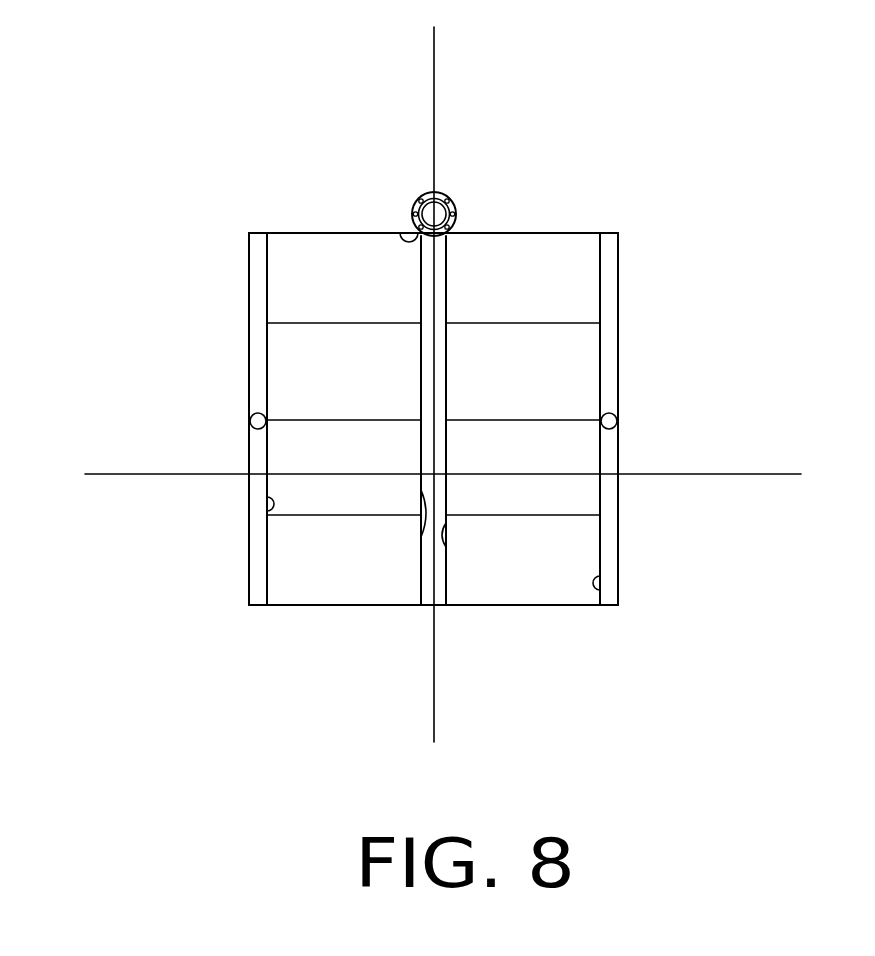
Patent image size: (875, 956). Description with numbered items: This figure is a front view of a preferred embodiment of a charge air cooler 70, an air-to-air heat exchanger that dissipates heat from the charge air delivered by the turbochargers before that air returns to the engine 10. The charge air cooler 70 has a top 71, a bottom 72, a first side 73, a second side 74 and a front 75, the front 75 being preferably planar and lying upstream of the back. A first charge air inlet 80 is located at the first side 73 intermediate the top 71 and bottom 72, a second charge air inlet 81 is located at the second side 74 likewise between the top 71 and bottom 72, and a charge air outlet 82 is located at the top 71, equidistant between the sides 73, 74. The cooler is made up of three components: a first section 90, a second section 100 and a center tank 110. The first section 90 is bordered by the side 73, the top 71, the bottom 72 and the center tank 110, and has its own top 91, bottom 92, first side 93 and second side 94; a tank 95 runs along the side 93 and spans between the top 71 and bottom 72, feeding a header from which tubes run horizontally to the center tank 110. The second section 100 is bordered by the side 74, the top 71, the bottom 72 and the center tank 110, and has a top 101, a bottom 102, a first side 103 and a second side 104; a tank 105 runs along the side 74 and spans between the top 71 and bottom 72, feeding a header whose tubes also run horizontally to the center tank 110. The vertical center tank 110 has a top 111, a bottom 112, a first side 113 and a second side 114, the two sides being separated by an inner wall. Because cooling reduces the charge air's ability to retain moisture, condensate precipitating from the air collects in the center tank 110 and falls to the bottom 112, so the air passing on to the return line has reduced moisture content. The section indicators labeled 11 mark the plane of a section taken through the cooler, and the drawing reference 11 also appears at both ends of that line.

The engine 10 is at (434, 27).
The section line 11- 11 is at (85, 474).
The charge air cooler 70 is at (717, 143).
The top 71 is at (547, 233).
The bottom 72 is at (543, 606).
The first side 73 is at (249, 262).
The second side 74 is at (618, 258).
The front 75 is at (598, 303).
The first charge air inlet 80 is at (252, 413).
The second charge air inlet 81 is at (617, 413).
The charge air outlet 82 is at (457, 205).
The first section 90 is at (278, 232).
The top 91 is at (313, 232).
The bottom 92 is at (292, 605).
The first side 93 is at (270, 508).
The second side 94 is at (421, 382).
The tank 95 is at (257, 308).
The second section 100 is at (587, 233).
The top 101 is at (497, 232).
The bottom 102 is at (582, 606).
The first side 103 is at (597, 580).
The second side 104 is at (449, 580).
The tank 105 is at (613, 372).
The center tank 110 is at (425, 282).
The top 111 is at (400, 232).
The bottom 112 is at (428, 607).
The first side 113 is at (422, 538).
The second side 114 is at (447, 550).